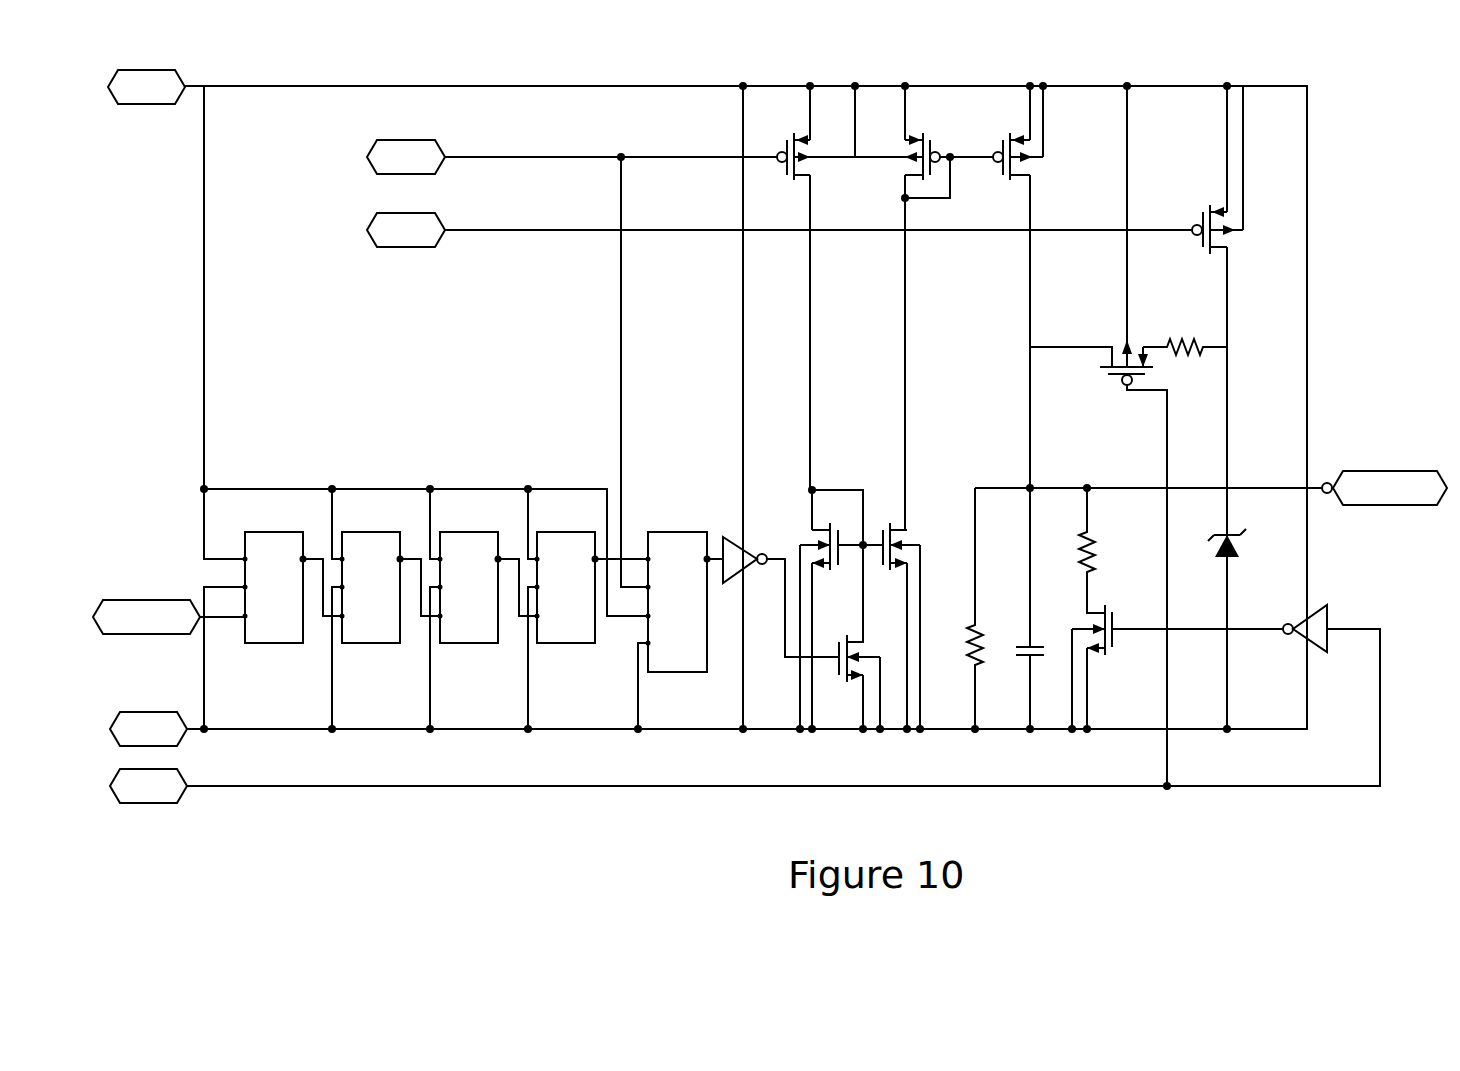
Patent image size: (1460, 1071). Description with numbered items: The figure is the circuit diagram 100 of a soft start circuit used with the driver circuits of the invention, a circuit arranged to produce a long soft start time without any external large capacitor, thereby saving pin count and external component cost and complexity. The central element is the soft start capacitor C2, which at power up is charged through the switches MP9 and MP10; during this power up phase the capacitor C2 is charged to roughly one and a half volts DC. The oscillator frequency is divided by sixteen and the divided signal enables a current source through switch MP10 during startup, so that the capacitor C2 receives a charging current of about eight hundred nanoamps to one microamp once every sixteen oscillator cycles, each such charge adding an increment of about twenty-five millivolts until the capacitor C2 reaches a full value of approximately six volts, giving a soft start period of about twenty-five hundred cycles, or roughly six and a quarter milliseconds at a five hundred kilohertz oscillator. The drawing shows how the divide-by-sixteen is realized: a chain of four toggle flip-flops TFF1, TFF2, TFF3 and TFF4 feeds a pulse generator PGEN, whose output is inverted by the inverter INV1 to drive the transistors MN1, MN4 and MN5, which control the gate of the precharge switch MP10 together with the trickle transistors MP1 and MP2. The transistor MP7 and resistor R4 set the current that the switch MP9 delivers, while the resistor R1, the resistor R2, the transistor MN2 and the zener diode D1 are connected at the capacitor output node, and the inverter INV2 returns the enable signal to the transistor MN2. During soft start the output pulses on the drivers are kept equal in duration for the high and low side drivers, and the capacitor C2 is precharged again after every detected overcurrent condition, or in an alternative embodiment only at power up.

The circuit diagram 100 is at (570, 77).
The toggle flip-flop 1 TFF1 is at (293, 579).
The toggle flip-flop 2 TFF2 is at (386, 609).
The toggle flip-flop 3 TFF3 is at (483, 609).
The toggle flip-flop 4 TFF4 is at (588, 609).
The pulse generator PGEN is at (674, 622).
The inverter 1 INV1 is at (773, 587).
The inverter 2 INV2 is at (1313, 618).
The PMOS transistor MP1 is at (924, 308).
The PMOS transistor MP2 is at (816, 288).
The PMOS transistor MP7 is at (1232, 287).
The switch MP9 is at (1122, 436).
The switch MP10 is at (1040, 287).
The NMOS transistor MN1 is at (812, 609).
The NMOS transistor MN2 is at (1158, 662).
The NMOS transistor MN4 is at (871, 672).
The NMOS transistor MN5 is at (910, 616).
The resistor R1 (1G) R1 is at (959, 608).
The resistor R2 (80K) R2 is at (1071, 550).
The resistor R4 (120K) R4 is at (1185, 314).
The soft start capacitor C2 is at (1013, 608).
The zener diode D1 (5.1V) D1 is at (1229, 608).